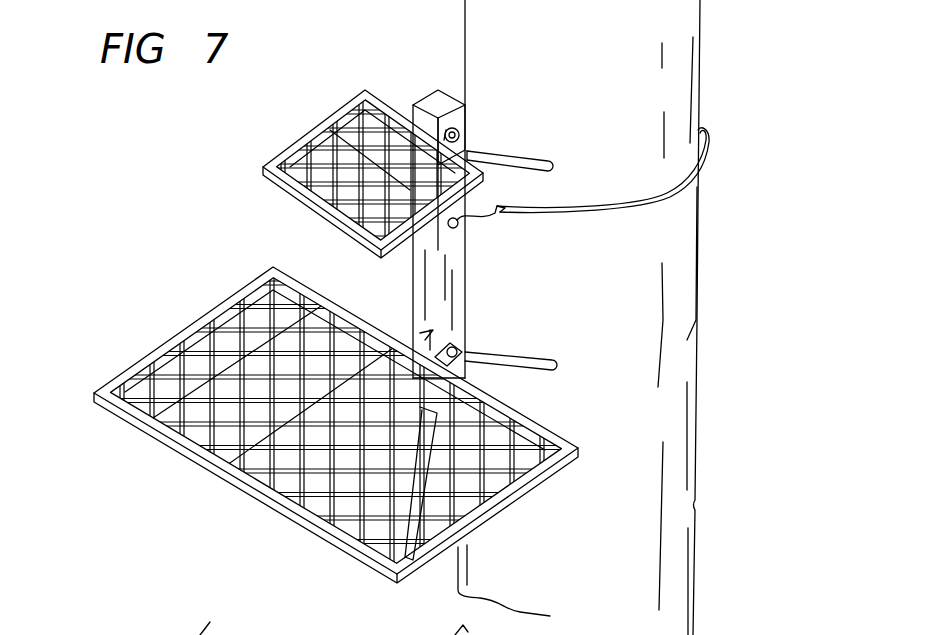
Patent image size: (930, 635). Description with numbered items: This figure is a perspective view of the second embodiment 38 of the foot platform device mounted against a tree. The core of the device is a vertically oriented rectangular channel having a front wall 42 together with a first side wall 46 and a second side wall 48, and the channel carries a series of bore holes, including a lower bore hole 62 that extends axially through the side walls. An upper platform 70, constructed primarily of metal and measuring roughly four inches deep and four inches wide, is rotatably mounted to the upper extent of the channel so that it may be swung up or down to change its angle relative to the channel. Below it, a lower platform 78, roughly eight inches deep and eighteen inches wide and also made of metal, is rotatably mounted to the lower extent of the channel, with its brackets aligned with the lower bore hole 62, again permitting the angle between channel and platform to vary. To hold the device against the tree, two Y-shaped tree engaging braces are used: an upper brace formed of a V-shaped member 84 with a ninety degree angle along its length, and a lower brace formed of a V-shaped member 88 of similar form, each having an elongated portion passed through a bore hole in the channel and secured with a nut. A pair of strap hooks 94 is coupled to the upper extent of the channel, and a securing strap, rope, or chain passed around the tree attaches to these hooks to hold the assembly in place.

The second embodiment 38 is at (153, 298).
The front wall 42 is at (427, 258).
The first side wall 46 is at (428, 100).
The second side wall 48 is at (467, 111).
The lower bore hole 62 is at (440, 328).
The upper platform 70 is at (284, 148).
The lower platform 78 is at (148, 437).
The V-shaped member 84 is at (528, 160).
The V-shaped member 88 is at (520, 366).
The strap hooks 94 is at (492, 210).